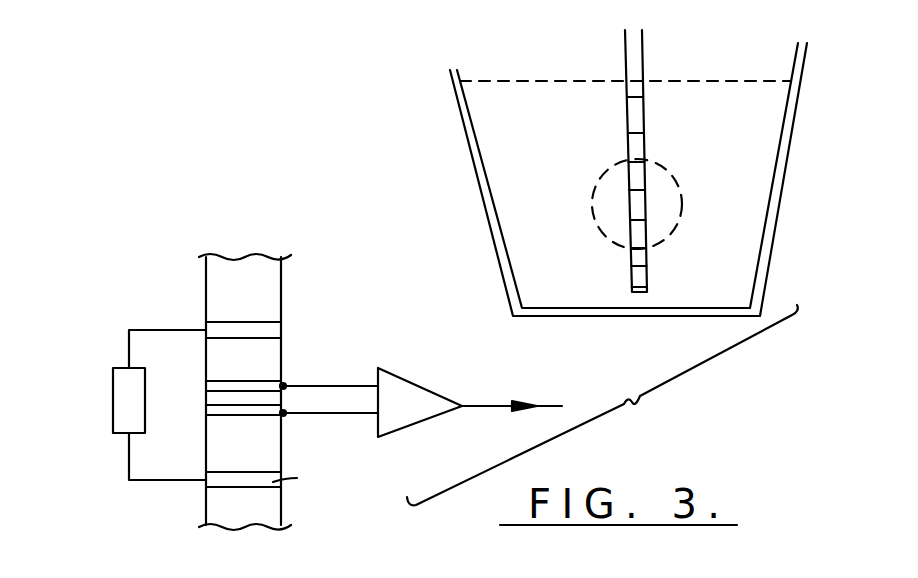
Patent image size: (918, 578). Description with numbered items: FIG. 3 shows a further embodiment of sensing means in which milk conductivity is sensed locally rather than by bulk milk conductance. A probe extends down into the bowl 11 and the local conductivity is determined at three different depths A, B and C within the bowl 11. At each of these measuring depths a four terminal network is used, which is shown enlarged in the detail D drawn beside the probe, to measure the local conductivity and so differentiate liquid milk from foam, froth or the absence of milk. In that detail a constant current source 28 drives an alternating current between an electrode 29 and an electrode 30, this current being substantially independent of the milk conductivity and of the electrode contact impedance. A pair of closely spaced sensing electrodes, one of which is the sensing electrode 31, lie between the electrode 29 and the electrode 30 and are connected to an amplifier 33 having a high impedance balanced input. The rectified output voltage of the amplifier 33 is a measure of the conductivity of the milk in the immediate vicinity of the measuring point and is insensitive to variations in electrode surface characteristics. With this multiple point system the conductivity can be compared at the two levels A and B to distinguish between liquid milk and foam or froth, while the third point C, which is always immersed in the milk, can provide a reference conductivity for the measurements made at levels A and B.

The bowl 11 is at (757, 205).
The constant current source 28 is at (118, 412).
The electrode 29 is at (273, 332).
The electrode 30 is at (263, 416).
The sensing electrode 31 is at (265, 386).
The amplifier 33 is at (417, 393).
The measuring depth A is at (640, 117).
The measuring depth B is at (645, 202).
The measuring depth C is at (646, 279).
The detail D is at (600, 230).